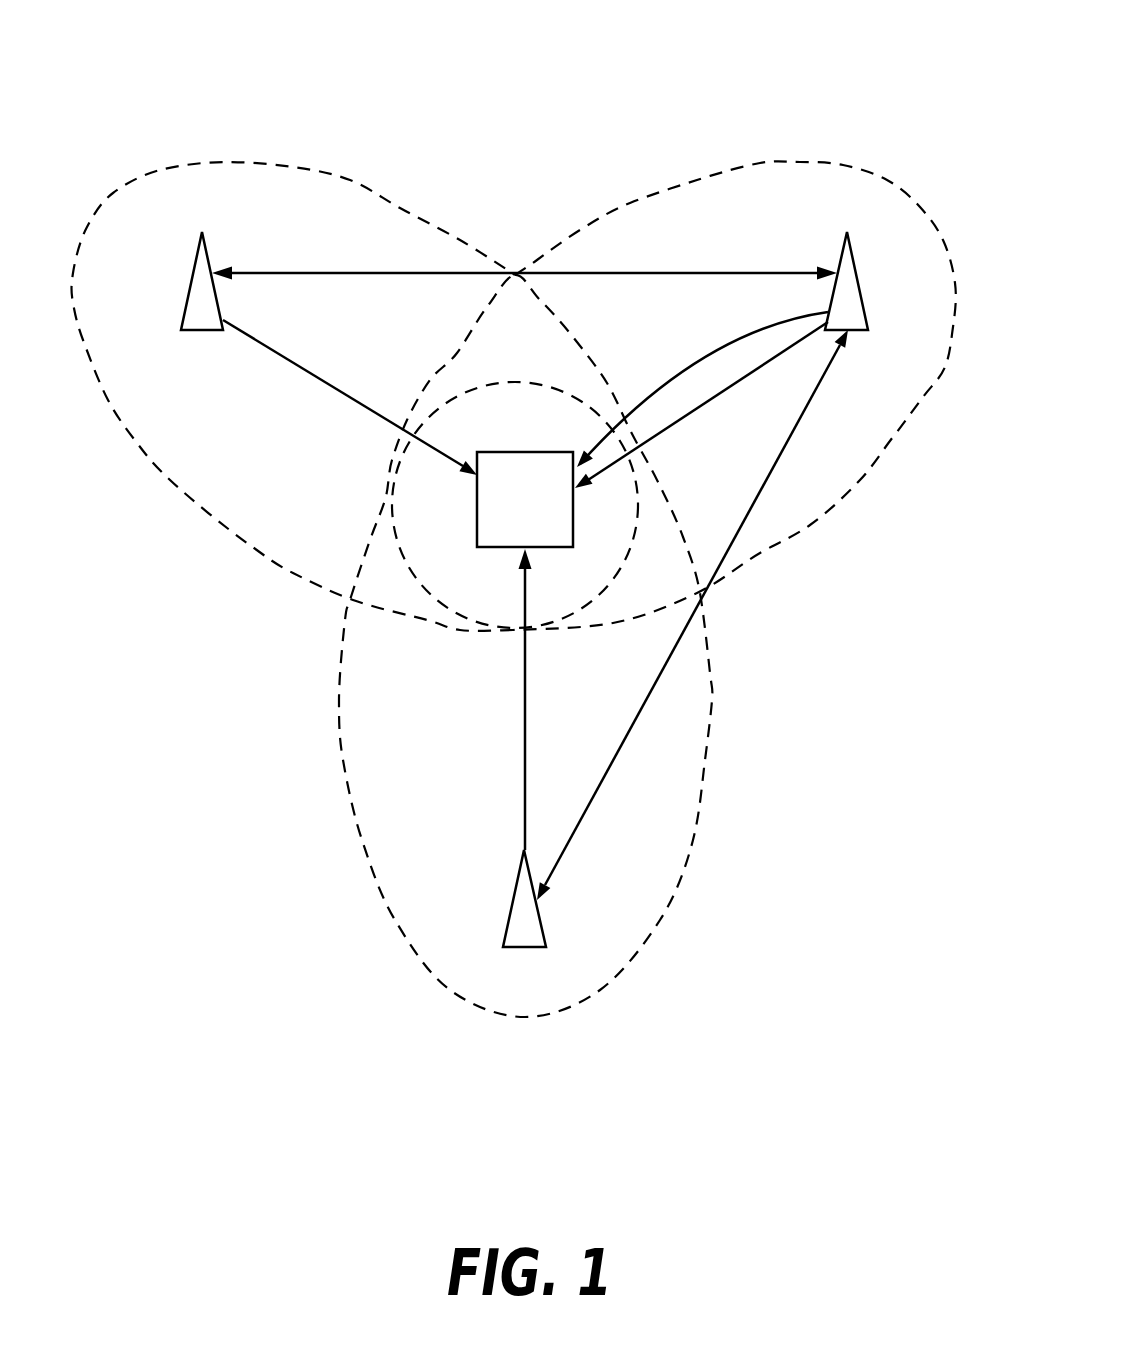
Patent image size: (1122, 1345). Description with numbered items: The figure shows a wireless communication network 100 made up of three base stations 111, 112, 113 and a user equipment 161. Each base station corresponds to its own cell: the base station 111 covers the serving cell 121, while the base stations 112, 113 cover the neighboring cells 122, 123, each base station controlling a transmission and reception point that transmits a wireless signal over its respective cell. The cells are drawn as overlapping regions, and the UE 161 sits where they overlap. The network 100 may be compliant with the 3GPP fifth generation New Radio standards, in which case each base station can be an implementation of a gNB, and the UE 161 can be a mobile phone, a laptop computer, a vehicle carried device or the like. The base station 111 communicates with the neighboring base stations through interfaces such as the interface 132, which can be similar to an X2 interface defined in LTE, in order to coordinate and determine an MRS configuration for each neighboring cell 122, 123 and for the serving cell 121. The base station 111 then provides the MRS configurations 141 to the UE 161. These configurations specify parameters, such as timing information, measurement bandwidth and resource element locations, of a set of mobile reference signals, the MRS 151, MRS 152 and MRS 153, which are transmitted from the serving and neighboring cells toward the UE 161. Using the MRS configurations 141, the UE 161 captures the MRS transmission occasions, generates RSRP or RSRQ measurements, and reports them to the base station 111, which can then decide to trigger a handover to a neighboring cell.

The wireless communication network 100 is at (927, 49).
The base station 111 is at (860, 297).
The base station 112 is at (187, 297).
The base station 113 is at (522, 230).
The cell 121 is at (893, 439).
The cell 122 is at (134, 441).
The cell 123 is at (681, 880).
The interface 132 is at (707, 590).
The MRS configurations 141 is at (684, 371).
The MRS 151 is at (693, 411).
The MRS 152 is at (362, 406).
The MRS 153 is at (523, 715).
The user equipment 161 is at (477, 505).